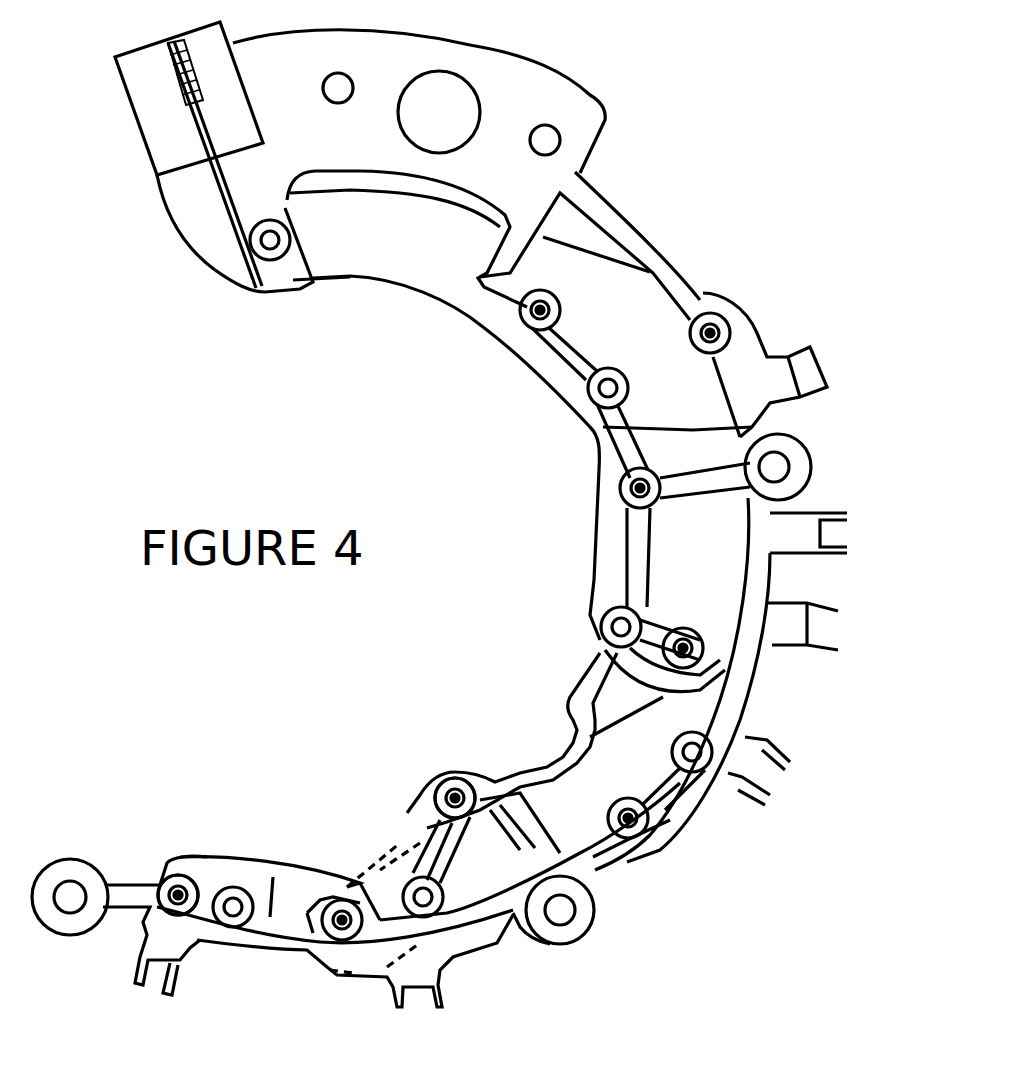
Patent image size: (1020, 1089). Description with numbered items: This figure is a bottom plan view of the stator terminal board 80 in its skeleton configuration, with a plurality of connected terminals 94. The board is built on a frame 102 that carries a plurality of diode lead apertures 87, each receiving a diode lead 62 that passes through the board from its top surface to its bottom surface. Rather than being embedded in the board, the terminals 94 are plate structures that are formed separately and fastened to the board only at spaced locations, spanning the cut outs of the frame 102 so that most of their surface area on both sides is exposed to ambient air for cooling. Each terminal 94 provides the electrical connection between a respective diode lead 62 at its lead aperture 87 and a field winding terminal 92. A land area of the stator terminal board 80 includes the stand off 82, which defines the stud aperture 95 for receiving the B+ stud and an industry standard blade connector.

The diode lead 62 is at (440, 778).
The stator terminal board 80 is at (608, 441).
The stand off 82 is at (808, 447).
The diode lead aperture 87 is at (463, 788).
The field winding terminal 92 is at (848, 550).
The terminal 94 is at (496, 546).
The stud aperture 95 is at (455, 95).
The frame 102 is at (587, 690).